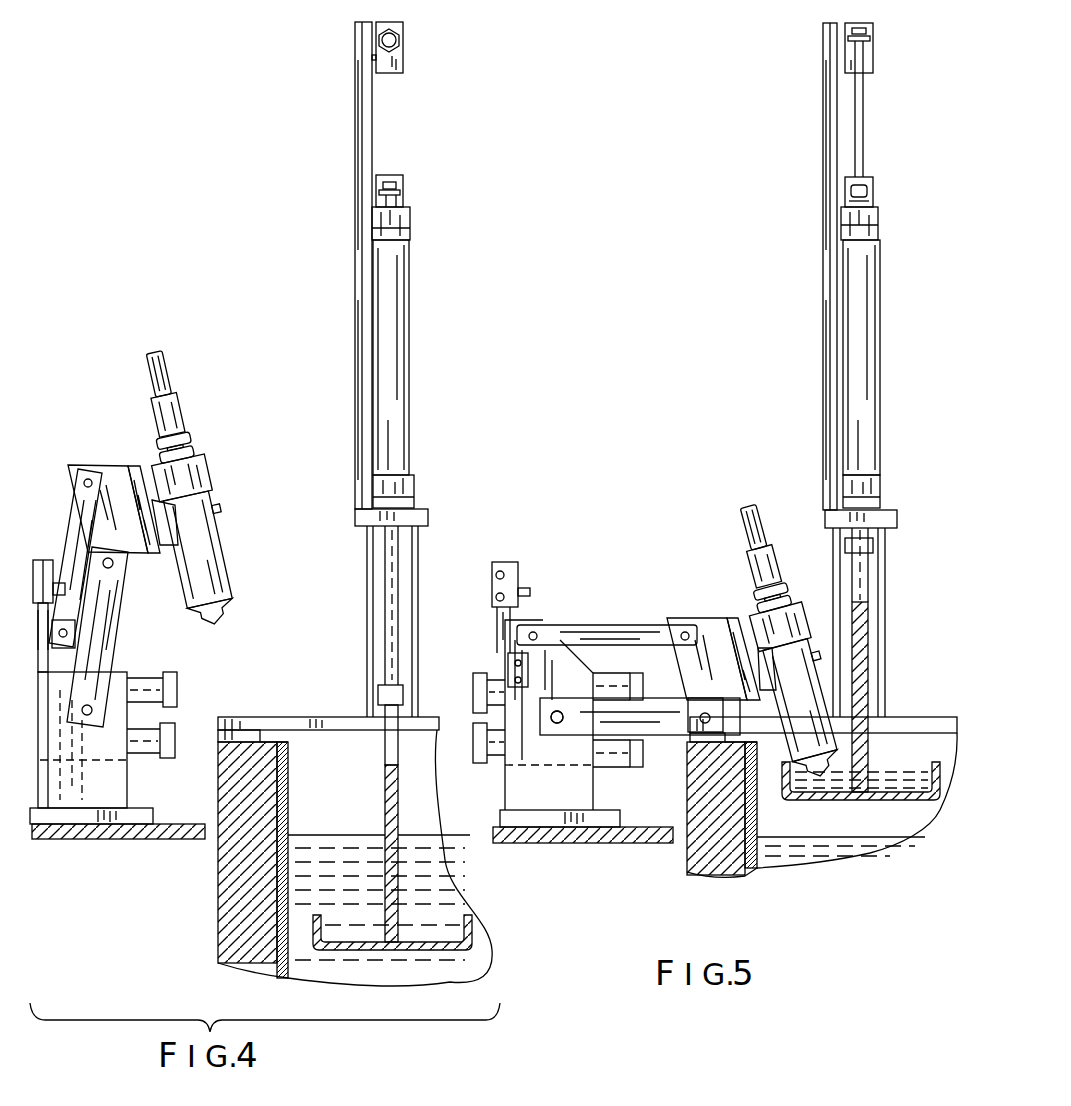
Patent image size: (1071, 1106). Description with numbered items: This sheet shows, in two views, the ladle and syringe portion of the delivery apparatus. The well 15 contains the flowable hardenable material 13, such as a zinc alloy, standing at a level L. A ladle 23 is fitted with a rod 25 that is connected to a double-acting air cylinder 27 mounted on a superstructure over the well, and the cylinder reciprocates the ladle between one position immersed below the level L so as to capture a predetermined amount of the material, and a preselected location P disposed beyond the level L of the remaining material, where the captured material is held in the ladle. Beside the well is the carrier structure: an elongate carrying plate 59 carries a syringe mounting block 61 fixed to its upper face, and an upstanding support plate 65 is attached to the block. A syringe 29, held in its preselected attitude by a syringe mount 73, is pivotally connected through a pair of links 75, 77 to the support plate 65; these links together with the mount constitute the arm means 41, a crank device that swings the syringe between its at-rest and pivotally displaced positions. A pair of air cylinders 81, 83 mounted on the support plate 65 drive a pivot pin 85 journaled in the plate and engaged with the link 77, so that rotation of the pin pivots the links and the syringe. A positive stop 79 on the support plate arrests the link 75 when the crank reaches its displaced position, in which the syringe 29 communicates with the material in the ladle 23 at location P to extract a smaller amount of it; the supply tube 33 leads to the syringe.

In FIG. 4, the flowable hardenable material 13 is at (475, 895).
In FIG. 5, the flowable hardenable material 13 is at (805, 860).
In FIG. 4, the well 15 is at (251, 966).
In FIG. 5, the well 15 is at (726, 876).
In FIG. 4, the ladle 23 is at (418, 955).
In FIG. 5, the ladle 23 is at (880, 803).
In FIG. 4, the rod 25 is at (383, 787).
In FIG. 5, the rod 25 is at (870, 682).
In FIG. 4, the double-acting air cylinder 27 is at (400, 312).
In FIG. 5, the double-acting air cylinder 27 is at (870, 312).
In FIG. 4, the syringe 29 is at (200, 536).
In FIG. 5, the syringe 29 is at (798, 616).
In FIG. 4, the supply tube 33 is at (164, 364).
In FIG. 5, the supply tube 33 is at (758, 531).
In FIG. 4, the arm means 41 is at (86, 426).
In FIG. 5, the arm means 41 is at (580, 534).
In FIG. 4, the carrying plate 59 is at (125, 840).
In FIG. 5, the carrying plate 59 is at (626, 843).
In FIG. 4, the syringe mounting block 61 is at (150, 820).
In FIG. 5, the syringe mounting block 61 is at (612, 819).
In FIG. 4, the support plate 65 is at (116, 773).
In FIG. 5, the support plate 65 is at (594, 783).
In FIG. 4, the syringe mount 73 is at (105, 477).
In FIG. 5, the syringe mount 73 is at (726, 620).
In FIG. 4, the link 75 is at (78, 500).
In FIG. 5, the link 75 is at (643, 627).
In FIG. 4, the link 77 is at (115, 605).
In FIG. 5, the link 77 is at (666, 737).
In FIG. 4, the positive stop 79 is at (46, 560).
In FIG. 5, the positive stop 79 is at (497, 562).
In FIG. 4, the air cylinder 81 is at (170, 690).
In FIG. 5, the air cylinder 81 is at (481, 680).
In FIG. 4, the air cylinder 83 is at (170, 738).
In FIG. 5, the air cylinder 83 is at (481, 752).
In FIG. 4, the pivot pin 85 is at (367, 582).
In FIG. 5, the pivot pin 85 is at (885, 606).
In FIG. 4, the level L is at (330, 835).
In FIG. 5, the level L is at (797, 837).
In FIG. 5, the preselected location P is at (923, 812).